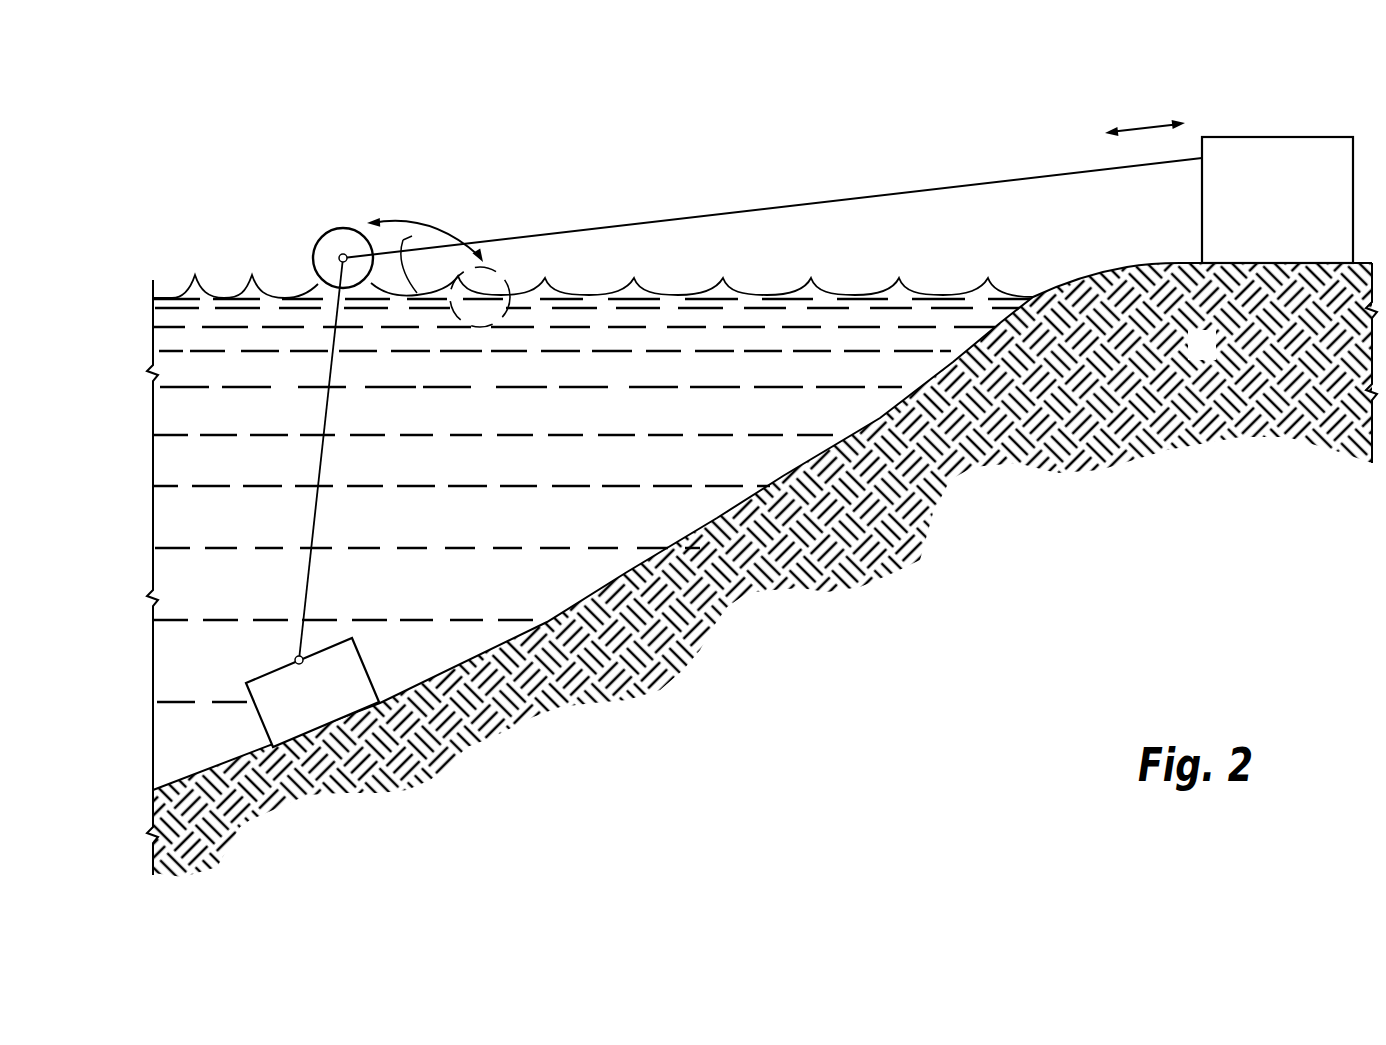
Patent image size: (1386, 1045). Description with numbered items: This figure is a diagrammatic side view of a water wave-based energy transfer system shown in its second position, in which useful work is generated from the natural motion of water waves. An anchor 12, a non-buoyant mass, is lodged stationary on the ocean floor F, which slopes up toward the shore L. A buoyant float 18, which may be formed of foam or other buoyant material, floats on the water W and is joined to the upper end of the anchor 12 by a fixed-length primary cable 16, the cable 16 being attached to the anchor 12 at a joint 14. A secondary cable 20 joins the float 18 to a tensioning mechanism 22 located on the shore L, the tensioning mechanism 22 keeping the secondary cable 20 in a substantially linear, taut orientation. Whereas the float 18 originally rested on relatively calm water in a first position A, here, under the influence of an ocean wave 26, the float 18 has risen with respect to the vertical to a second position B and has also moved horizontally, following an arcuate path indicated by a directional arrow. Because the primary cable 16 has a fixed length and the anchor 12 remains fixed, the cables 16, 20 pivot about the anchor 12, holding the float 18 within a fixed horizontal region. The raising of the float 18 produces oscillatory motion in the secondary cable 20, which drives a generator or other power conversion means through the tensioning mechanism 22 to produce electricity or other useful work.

The anchor 12 is at (248, 722).
The joint of primary cable to anchor 14 is at (296, 658).
The primary cable 16 is at (321, 453).
The buoyant float 18 is at (340, 228).
The secondary cable 20 is at (858, 196).
The tensioning mechanism 22 is at (1280, 137).
The ocean wave 26 is at (425, 217).
The first position A is at (533, 259).
The second position B is at (367, 203).
The ocean floor F is at (493, 628).
The water W is at (256, 470).
The shore L is at (1192, 357).